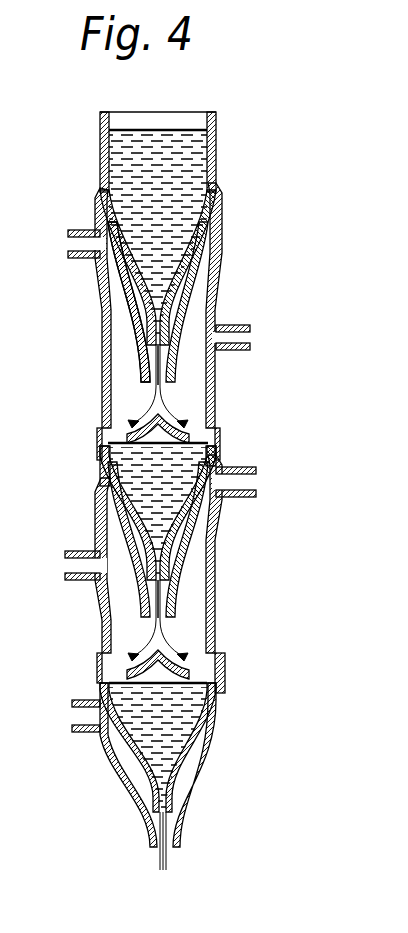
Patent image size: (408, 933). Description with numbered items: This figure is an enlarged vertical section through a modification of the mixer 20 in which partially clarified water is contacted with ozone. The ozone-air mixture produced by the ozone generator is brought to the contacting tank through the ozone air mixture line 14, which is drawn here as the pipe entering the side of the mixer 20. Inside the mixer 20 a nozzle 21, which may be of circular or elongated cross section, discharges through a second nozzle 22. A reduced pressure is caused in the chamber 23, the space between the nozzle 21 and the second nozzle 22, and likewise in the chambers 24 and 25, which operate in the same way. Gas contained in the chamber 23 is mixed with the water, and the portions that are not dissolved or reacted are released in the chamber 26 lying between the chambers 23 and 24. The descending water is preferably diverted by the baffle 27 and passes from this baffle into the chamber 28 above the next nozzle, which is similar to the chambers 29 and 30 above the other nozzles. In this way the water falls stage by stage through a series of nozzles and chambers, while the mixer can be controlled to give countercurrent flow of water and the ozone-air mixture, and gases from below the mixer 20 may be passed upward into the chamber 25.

The ozone air mixture line 14 is at (80, 700).
The mixer 20 is at (214, 153).
The nozzle 21 is at (182, 291).
The second nozzle 22 is at (182, 380).
The chamber 23 is at (123, 283).
The chamber 24 is at (188, 541).
The chamber 25 is at (198, 758).
The chamber 26 is at (133, 382).
The baffle 27 is at (127, 438).
The chamber 28 is at (118, 490).
The chamber 29 is at (120, 154).
The chamber 30 is at (211, 686).